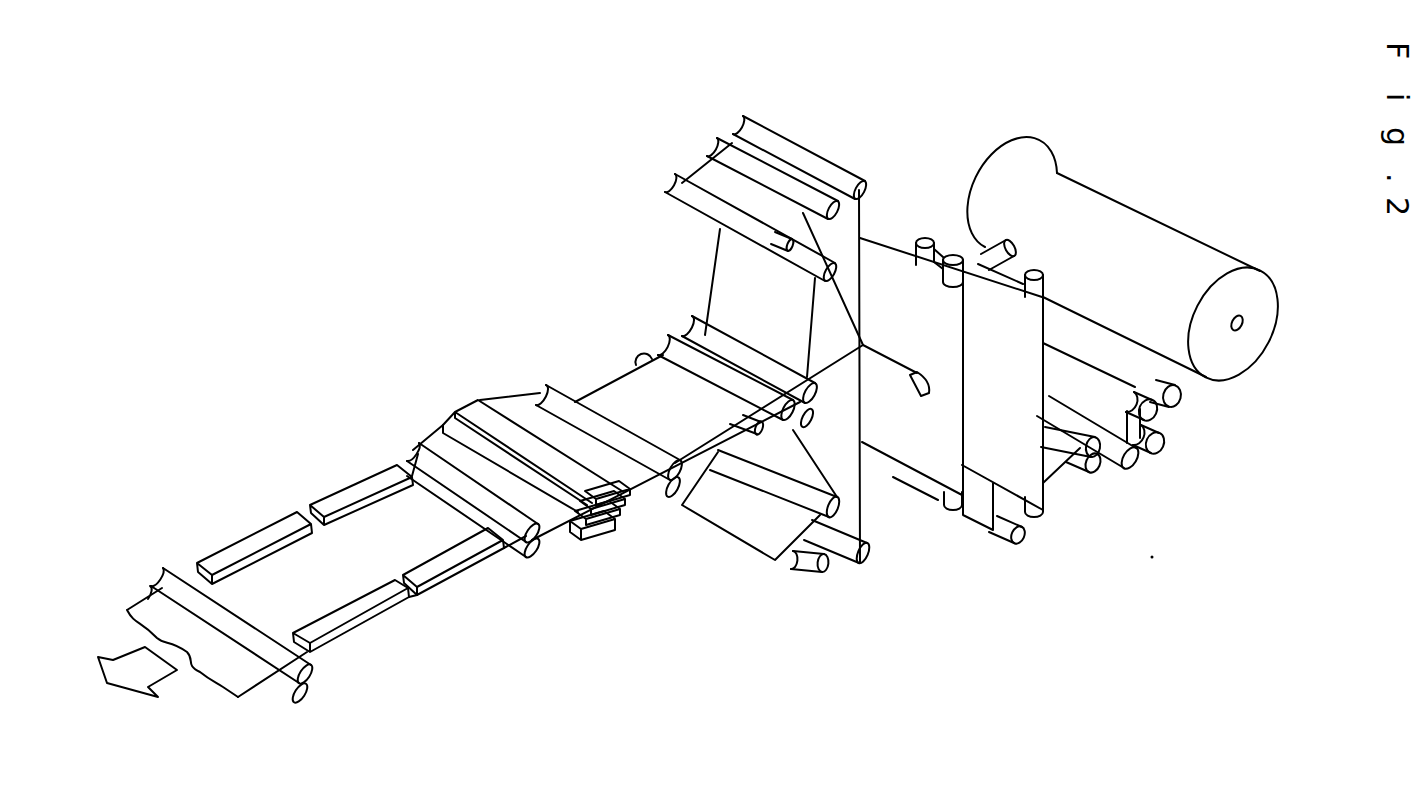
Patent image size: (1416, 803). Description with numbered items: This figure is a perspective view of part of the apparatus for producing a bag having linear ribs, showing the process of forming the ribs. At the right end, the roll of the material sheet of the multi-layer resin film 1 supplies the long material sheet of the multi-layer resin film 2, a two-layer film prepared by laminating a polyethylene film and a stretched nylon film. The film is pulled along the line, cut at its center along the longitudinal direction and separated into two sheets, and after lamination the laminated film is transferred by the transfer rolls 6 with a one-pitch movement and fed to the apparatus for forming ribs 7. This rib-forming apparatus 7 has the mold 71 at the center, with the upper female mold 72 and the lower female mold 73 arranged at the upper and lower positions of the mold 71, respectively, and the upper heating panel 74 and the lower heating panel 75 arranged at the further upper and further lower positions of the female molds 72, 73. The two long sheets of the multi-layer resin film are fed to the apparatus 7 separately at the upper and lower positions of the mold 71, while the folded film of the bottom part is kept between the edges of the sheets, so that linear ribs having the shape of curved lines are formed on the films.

The roll of the material sheet of the multi-layer resin film 1 is at (1253, 292).
The multi-layer resin film 2 is at (1163, 368).
The transfer rolls 6 is at (163, 572).
The apparatus for forming ribs 7 is at (517, 412).
The mold 71 is at (575, 532).
The upper female mold 72 is at (627, 497).
The lower female mold 73 is at (623, 517).
The upper heating panel 74 is at (473, 409).
The lower heating panel 75 is at (597, 547).